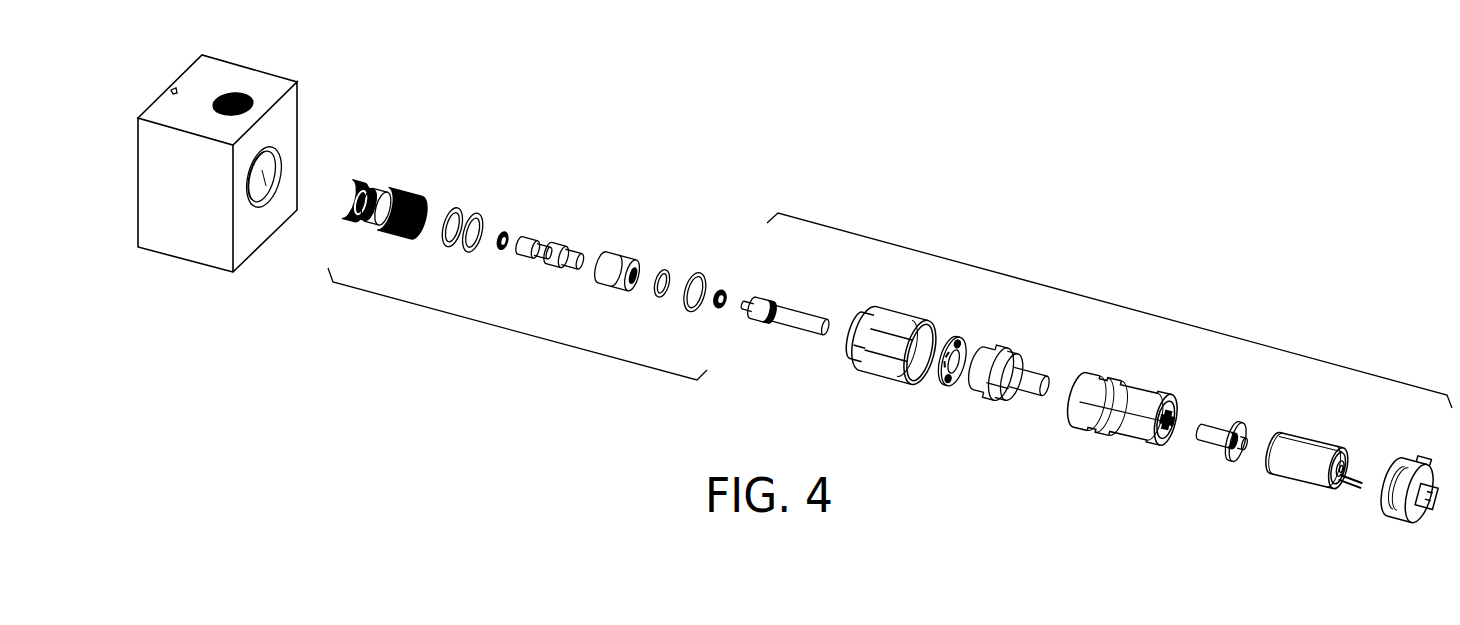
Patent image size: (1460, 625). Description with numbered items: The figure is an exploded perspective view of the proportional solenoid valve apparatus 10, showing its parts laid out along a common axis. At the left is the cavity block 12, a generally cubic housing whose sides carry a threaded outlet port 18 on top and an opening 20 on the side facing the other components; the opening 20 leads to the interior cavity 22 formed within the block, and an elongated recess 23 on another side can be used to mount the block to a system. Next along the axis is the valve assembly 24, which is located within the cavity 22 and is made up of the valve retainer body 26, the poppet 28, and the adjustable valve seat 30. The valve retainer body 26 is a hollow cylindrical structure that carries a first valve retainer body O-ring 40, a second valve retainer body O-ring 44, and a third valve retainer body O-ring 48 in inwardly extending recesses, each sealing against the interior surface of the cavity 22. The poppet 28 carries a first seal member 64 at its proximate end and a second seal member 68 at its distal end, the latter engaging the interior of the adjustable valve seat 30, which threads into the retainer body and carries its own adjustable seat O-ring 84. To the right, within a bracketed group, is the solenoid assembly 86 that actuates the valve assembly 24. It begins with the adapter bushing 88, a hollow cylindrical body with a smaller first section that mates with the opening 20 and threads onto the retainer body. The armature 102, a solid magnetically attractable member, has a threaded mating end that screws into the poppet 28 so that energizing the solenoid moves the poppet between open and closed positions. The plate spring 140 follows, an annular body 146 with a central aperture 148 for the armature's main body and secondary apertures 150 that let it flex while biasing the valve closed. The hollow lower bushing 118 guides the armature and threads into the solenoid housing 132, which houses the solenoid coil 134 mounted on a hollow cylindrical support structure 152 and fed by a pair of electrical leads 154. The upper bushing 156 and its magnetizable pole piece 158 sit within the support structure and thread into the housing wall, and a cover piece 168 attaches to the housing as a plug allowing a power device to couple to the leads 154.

The proportional solenoid valve apparatus 10 is at (958, 160).
The cavity block 12 is at (160, 187).
The outlet port 18 is at (236, 95).
The opening 20 is at (277, 152).
The interior cavity 22 is at (269, 187).
The elongated recess 23 is at (173, 91).
The valve assembly 24 is at (517, 324).
The valve retainer body 26 is at (393, 193).
The poppet 28 is at (555, 248).
The adjustable valve seat 30 is at (623, 263).
The first valve retainer body O-ring 40 is at (457, 208).
The second valve retainer body O-ring 44 is at (479, 215).
The third valve retainer body O-ring 48 is at (702, 277).
The first seal member 64 is at (508, 233).
The second seal member 68 is at (728, 295).
The adjustable seat O-ring 84 is at (668, 272).
The solenoid assembly 86 is at (1109, 310).
The adapter bushing 88 is at (903, 318).
The armature 102 is at (802, 322).
The lower bushing 118 is at (1010, 354).
The solenoid housing 132 is at (1112, 430).
The solenoid coil 134 is at (1300, 470).
The plate spring 140 is at (953, 390).
The annular body 146 is at (940, 378).
The central aperture 148 is at (958, 342).
The secondary apertures 150 is at (964, 352).
The hollow cylindrical support structure 152 is at (1342, 470).
The electrical leads 154 is at (1357, 488).
The upper bushing 156 is at (1216, 445).
The pole piece 158 is at (1245, 440).
The cover piece 168 is at (1410, 512).